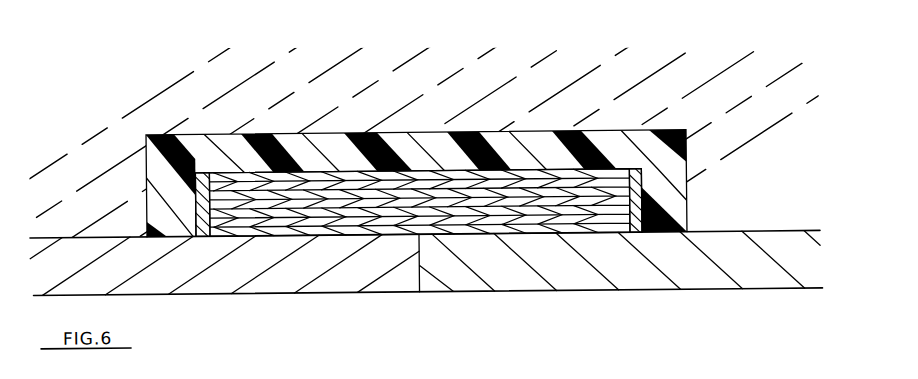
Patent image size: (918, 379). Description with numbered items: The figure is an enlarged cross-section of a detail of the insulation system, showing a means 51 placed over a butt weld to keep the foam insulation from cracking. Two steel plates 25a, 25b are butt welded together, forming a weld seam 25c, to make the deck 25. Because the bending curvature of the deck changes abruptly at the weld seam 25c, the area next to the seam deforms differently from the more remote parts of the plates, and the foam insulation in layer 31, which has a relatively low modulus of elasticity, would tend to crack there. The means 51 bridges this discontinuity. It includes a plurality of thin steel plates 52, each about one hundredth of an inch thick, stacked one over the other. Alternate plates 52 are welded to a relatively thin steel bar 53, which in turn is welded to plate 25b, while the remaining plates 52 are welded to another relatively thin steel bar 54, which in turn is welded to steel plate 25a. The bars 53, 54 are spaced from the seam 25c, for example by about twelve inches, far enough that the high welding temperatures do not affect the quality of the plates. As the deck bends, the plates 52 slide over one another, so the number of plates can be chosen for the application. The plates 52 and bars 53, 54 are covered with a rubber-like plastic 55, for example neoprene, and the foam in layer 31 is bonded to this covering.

The deck 25 is at (429, 247).
The steel plate 25a is at (302, 277).
The steel plate 25b is at (543, 287).
The weld seam 25c is at (423, 299).
The foam insulation layer 31 is at (95, 152).
The means for bridging the discontinuity 51 is at (696, 111).
The steel plates 52 is at (345, 181).
The steel bar 53 is at (640, 194).
The steel bar 54 is at (198, 205).
The rubber-like plastic 55 is at (512, 157).